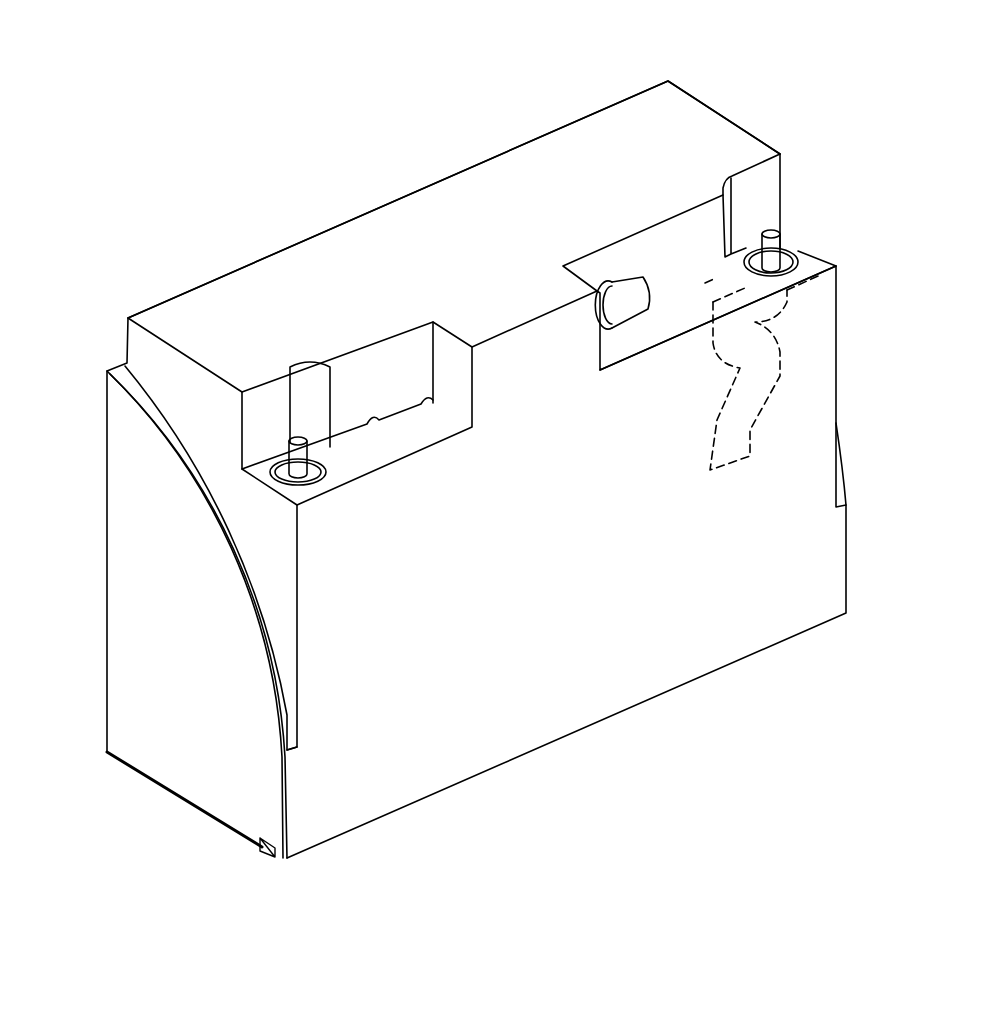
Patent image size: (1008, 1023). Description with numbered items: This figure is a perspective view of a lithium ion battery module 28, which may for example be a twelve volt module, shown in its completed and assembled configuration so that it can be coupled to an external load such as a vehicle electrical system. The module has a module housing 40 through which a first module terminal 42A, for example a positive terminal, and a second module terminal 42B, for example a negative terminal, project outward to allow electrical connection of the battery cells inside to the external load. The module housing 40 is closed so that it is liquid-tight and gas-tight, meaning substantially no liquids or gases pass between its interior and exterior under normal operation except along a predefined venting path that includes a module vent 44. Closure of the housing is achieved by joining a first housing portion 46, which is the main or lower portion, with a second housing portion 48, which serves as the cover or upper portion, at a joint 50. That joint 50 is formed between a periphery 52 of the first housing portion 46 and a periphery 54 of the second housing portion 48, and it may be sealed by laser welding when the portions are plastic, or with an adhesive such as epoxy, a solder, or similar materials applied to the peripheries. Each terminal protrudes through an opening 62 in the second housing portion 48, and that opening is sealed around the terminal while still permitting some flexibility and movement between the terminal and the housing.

The lithium ion battery module 28 is at (463, 55).
The module housing 40 is at (236, 228).
The first module terminal 42A is at (796, 239).
The second module terminal 42B is at (280, 443).
The module vent 44 is at (628, 292).
The first housing portion 46 is at (140, 668).
The second housing portion 48 is at (403, 220).
The joint 50 is at (132, 398).
The periphery of the first housing portion 52 is at (287, 712).
The periphery of the second housing portion 54 is at (262, 848).
The opening 62 is at (800, 258).